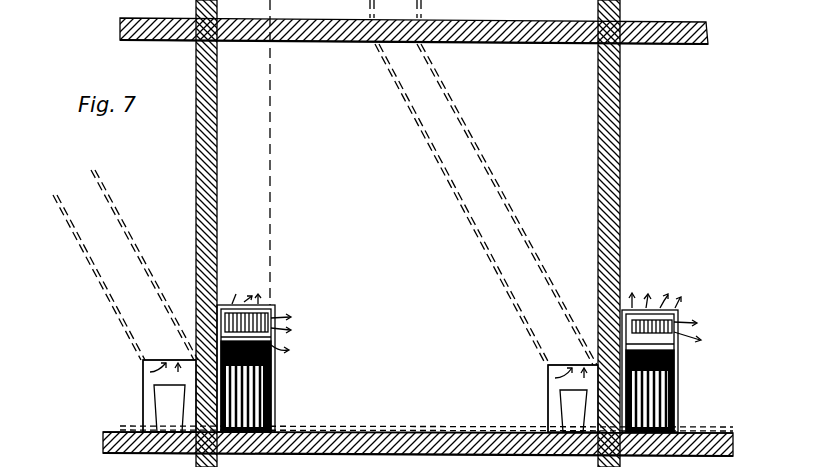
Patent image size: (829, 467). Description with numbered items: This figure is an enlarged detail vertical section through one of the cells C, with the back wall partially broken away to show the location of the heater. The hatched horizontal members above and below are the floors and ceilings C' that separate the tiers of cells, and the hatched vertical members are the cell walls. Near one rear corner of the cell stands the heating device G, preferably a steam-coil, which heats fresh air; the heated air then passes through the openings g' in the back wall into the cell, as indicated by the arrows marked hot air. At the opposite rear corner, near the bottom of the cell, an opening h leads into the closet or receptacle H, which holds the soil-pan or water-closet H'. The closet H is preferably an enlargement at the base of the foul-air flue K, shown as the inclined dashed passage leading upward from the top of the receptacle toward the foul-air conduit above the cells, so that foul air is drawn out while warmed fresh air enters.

The floor and ceiling C' is at (418, 237).
The closet or receptacle H is at (368, 233).
The door, opening, or passage h is at (158, 360).
The soil-pan or water-closet H' is at (329, 406).
The foul-air flue K is at (472, 200).
The cell C is at (426, 215).
The heating device G is at (275, 385).
The opening g' is at (483, 319).